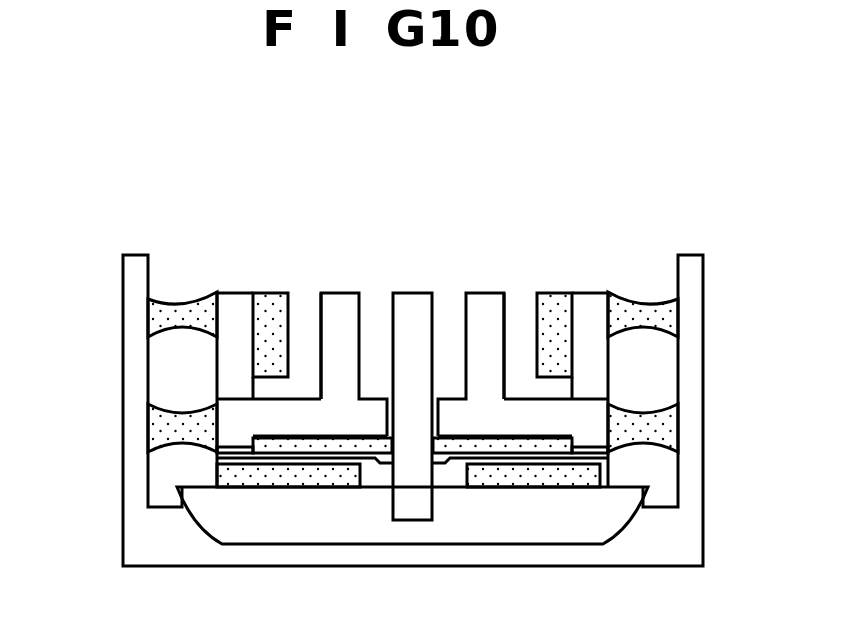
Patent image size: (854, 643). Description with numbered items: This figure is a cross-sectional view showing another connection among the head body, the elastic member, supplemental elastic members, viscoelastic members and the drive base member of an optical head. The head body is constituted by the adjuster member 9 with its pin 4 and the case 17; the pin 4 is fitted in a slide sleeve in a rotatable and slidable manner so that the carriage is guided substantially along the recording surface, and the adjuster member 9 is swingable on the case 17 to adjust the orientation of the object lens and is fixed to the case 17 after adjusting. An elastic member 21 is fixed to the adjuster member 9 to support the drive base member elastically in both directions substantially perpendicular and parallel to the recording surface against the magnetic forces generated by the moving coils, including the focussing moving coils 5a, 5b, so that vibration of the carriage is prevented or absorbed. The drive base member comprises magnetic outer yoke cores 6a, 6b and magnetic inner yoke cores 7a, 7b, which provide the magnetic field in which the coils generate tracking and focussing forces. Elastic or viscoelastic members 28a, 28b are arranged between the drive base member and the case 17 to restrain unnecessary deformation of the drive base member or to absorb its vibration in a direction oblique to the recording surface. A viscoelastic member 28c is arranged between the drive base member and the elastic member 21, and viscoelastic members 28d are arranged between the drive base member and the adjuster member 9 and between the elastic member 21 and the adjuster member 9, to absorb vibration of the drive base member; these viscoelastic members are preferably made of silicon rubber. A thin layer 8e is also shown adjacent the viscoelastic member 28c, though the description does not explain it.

The pin 4 is at (415, 305).
The focussing moving coil 5a is at (555, 300).
The focussing moving coil 5b is at (272, 297).
The magnetic outer yoke core 6a is at (595, 303).
The magnetic outer yoke core 6b is at (230, 297).
The magnetic inner yoke core 7a is at (485, 305).
The magnetic inner yoke core 7b is at (342, 305).
The thin elastic layer 8e is at (215, 448).
The adjuster member 9 is at (467, 520).
The case 17 is at (687, 388).
The elastic member 21 is at (530, 460).
The elastic or viscoelastic member 28a is at (668, 315).
The elastic or viscoelastic member 28b is at (150, 307).
The viscoelastic member 28c is at (302, 437).
The viscoelastic member 28d is at (347, 487).